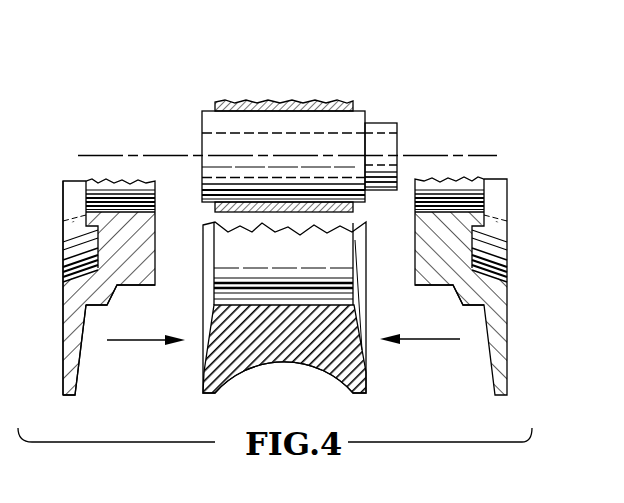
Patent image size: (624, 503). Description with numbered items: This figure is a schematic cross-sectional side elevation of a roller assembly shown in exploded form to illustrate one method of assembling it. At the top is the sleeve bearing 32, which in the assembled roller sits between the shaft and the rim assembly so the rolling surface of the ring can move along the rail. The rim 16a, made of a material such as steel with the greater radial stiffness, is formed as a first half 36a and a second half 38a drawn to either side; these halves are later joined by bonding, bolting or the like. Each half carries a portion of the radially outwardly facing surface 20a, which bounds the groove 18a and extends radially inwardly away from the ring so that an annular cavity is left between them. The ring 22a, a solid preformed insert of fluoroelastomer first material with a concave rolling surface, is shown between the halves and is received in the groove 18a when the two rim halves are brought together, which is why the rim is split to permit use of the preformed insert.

The rim 16a is at (79, 271).
The groove 18a is at (82, 354).
The outwardly facing surface 20a is at (123, 298).
The ring 22a is at (377, 378).
The sleeve bearing 32 is at (214, 103).
The first half 36a is at (63, 202).
The second half 38a is at (508, 205).